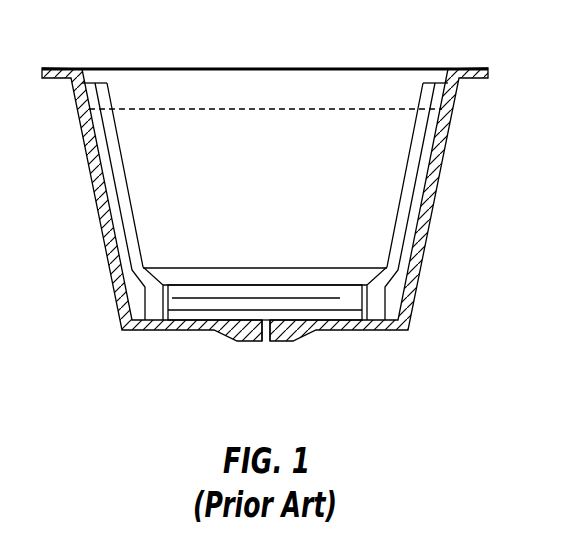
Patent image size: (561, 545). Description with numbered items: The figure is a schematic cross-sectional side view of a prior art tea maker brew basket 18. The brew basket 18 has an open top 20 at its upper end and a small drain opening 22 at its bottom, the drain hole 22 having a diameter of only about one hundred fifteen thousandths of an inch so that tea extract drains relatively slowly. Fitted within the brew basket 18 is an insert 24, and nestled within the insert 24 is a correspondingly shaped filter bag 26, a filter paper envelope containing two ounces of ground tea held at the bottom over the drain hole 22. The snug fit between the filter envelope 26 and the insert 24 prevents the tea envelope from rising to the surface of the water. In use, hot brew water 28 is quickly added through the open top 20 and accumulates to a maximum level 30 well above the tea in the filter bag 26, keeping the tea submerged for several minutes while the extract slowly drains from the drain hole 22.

The brew basket 18 is at (457, 143).
The open top 20 is at (350, 68).
The drain opening 22 is at (264, 341).
The insert 24 is at (177, 310).
The filter bag 26 is at (345, 308).
The hot brew water 28 is at (368, 225).
The level 30 is at (140, 108).